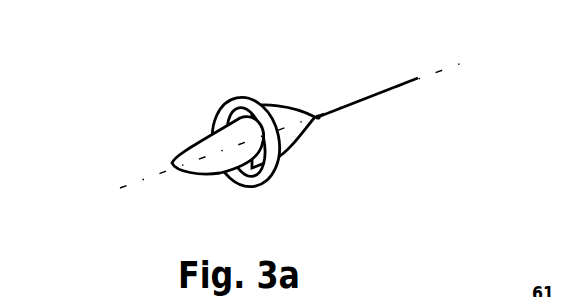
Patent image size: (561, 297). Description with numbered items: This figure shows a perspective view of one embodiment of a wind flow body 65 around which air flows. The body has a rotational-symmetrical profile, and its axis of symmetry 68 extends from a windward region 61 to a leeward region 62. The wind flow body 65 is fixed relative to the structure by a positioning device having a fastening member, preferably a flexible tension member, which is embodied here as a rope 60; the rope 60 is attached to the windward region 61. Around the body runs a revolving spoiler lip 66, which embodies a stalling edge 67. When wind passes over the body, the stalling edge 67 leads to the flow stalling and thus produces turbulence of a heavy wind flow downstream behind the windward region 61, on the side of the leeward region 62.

The rope 60 is at (372, 97).
The windward region 61 is at (275, 92).
The leeward region 62 is at (173, 142).
The wind flow body 65 is at (273, 132).
The revolving spoiler lip 66 is at (252, 173).
The stalling edge 67 is at (267, 165).
The axis of symmetry 68 is at (443, 72).